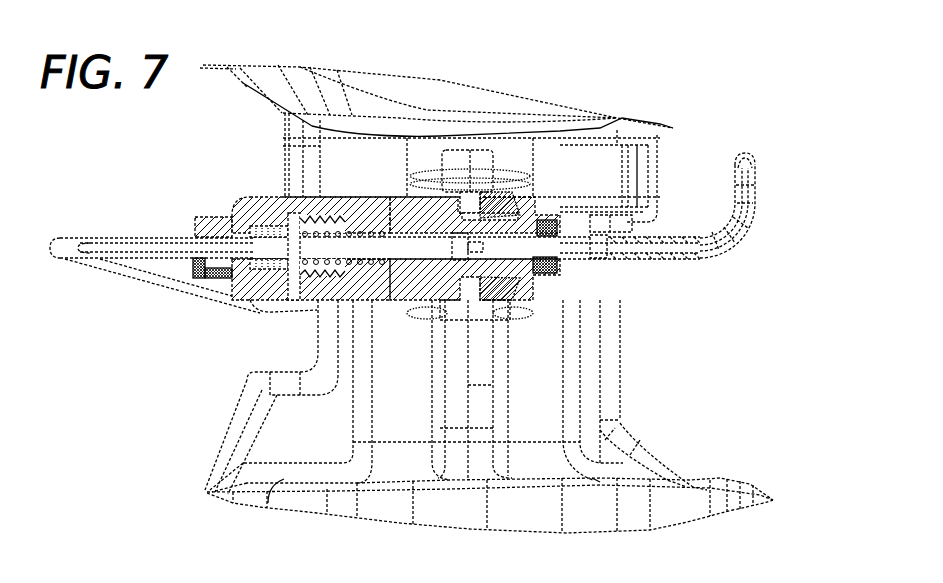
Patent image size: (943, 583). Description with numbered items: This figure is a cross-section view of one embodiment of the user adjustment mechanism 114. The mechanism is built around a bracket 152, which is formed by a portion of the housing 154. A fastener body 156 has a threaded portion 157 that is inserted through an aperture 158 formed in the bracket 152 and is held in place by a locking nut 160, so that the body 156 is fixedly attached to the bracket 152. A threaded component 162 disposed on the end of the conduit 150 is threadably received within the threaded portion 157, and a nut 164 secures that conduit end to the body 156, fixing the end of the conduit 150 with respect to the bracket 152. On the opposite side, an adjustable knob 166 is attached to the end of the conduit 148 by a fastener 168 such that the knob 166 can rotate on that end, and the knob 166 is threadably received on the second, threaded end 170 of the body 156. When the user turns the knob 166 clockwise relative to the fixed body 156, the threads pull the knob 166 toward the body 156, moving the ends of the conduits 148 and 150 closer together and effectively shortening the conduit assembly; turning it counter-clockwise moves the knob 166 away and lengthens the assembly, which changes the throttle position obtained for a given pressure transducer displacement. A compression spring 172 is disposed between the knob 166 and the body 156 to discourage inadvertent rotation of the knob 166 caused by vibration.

The user adjustment mechanism 114 is at (203, 131).
The conduit 148 is at (68, 242).
The conduit 150 is at (750, 155).
The bracket 152 is at (476, 155).
The housing 154 is at (265, 420).
The fastener body 156 is at (402, 200).
The threaded portion 157 is at (522, 228).
The aperture 158 is at (465, 214).
The locking nut 160 is at (505, 206).
The threaded component 162 is at (574, 258).
The nut 164 is at (556, 266).
The adjustable knob 166 is at (271, 200).
The fastener 168 is at (196, 222).
The second, threaded end 170 is at (318, 220).
The compression spring 172 is at (265, 235).